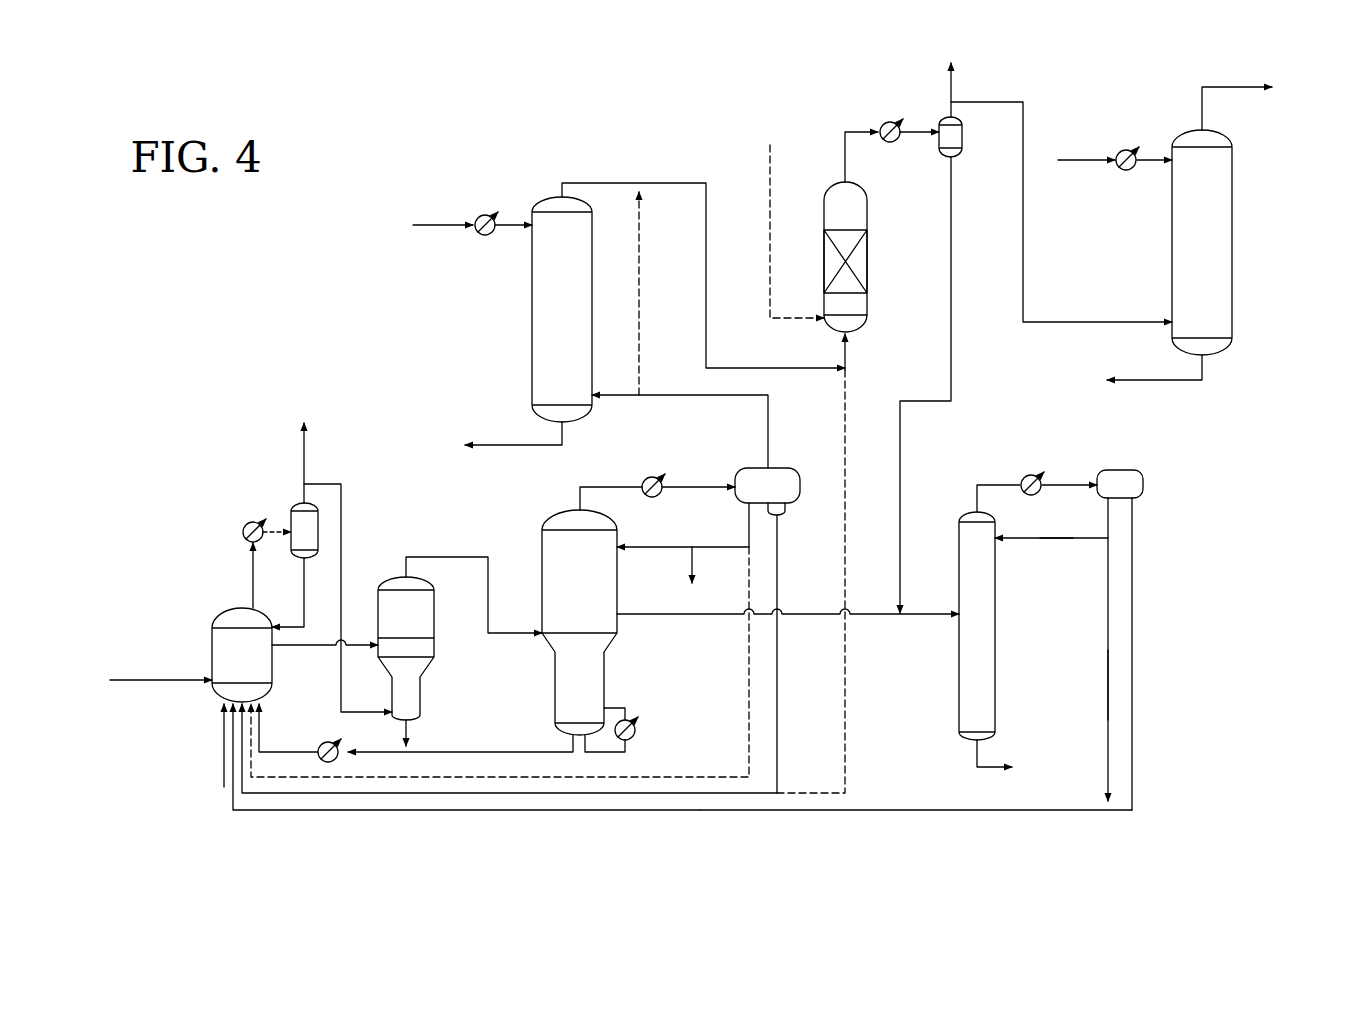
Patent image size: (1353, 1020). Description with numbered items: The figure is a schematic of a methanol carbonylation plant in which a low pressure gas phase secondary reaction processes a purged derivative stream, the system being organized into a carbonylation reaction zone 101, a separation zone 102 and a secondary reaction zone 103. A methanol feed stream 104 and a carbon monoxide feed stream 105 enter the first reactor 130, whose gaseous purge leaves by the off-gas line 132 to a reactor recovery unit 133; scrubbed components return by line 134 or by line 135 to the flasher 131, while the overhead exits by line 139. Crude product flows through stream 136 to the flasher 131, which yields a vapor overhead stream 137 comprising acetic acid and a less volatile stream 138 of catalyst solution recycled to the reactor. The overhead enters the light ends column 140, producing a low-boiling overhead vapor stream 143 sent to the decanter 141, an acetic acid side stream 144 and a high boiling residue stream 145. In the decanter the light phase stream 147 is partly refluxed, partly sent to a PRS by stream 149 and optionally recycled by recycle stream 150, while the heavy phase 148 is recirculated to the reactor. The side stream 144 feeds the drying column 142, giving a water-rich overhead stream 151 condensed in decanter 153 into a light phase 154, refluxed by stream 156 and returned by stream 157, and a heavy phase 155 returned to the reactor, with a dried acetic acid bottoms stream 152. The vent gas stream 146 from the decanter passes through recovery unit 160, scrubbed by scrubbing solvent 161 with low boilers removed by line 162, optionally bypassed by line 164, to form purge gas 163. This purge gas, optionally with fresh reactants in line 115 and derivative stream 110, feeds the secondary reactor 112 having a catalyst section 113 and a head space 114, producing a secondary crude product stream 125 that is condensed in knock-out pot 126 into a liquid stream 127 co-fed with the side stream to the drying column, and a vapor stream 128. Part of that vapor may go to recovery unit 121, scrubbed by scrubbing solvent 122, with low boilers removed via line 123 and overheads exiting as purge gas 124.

The carbonylation reaction zone 101 is at (402, 822).
The separation zone 102 is at (868, 822).
The secondary reaction zone 103 is at (765, 107).
The methanol feed stream 104 is at (160, 683).
The carbon monoxide feed stream 105 is at (222, 745).
The optional derivative stream 110 is at (846, 527).
The secondary reactor 112 is at (823, 260).
The catalyst section 113 is at (858, 262).
The head space 114 is at (850, 310).
The line 115 is at (768, 248).
The recovery unit 121 is at (1208, 247).
The scrubbing solvent 122 is at (1075, 158).
The line 123 is at (1158, 380).
The purge gas 124 is at (1240, 88).
The secondary crude product stream 125 is at (858, 130).
The knock-out pot 126 is at (934, 145).
The liquid stream 127 is at (952, 357).
The vapor stream 128 is at (973, 102).
The first reactor 130 is at (218, 637).
The flasher 131 is at (422, 612).
The off-gas line 132 is at (252, 577).
The reactor recovery unit 133 is at (300, 505).
The line 134 is at (300, 570).
The line 135 is at (343, 527).
The stream 136 is at (305, 648).
The vapor overhead stream 137 is at (433, 555).
The less volatile stream 138 is at (408, 727).
The line 139 is at (303, 455).
The light ends column 140 is at (598, 682).
The decanter 141 is at (782, 482).
The drying column 142 is at (975, 697).
The low-boiling overhead vapor stream 143 is at (617, 482).
The side stream 144 is at (667, 617).
The high boiling residue stream 145 is at (526, 752).
The vent gas stream 146 is at (672, 392).
The light phase stream 147 is at (749, 525).
The heavy phase 148 is at (778, 578).
The stream 149 is at (692, 560).
The optional recycle stream 150 is at (749, 733).
The overhead stream 151 is at (992, 483).
The bottoms stream 152 is at (977, 754).
The decanter 153 is at (1118, 480).
The light phase 154 is at (1108, 518).
The heavy phase 155 is at (1132, 535).
The stream 156 is at (1073, 542).
The stream 157 is at (1108, 687).
The recovery unit 160 is at (548, 305).
The scrubbing solvent 161 is at (435, 225).
The line 162 is at (492, 445).
The purge gas 163 is at (707, 238).
The line 164 is at (640, 278).